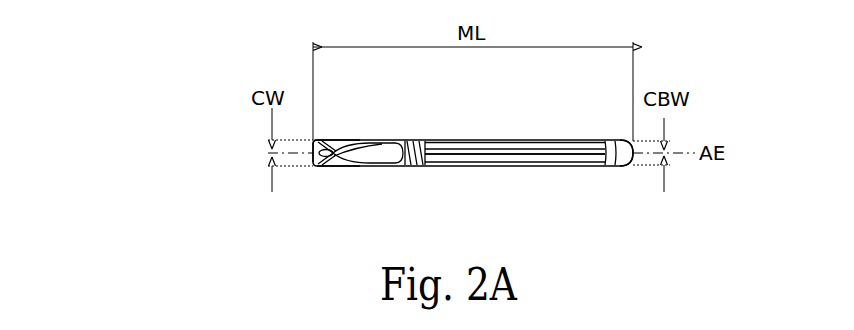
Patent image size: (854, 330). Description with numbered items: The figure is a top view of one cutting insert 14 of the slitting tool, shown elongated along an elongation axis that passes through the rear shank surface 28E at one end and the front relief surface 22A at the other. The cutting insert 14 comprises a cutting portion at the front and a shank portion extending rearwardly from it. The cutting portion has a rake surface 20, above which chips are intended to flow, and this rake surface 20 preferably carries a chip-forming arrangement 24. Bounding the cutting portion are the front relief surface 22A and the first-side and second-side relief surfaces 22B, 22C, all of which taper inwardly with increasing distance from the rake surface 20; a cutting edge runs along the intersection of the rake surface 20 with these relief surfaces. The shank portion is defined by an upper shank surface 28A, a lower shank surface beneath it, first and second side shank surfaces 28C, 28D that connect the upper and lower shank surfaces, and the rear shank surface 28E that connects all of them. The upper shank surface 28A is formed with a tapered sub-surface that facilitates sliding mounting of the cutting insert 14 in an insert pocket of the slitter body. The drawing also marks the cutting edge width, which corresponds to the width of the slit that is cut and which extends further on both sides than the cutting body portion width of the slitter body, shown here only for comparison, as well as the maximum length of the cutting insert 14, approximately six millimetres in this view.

The cutting insert 14 is at (243, 52).
The rake surface 20 is at (377, 150).
The front relief surface 22A is at (260, 153).
The first-side relief surface 22B is at (347, 172).
The second-side relief surface 22C is at (339, 130).
The chip-forming arrangement 24 is at (334, 168).
The upper shank surface 28A is at (553, 160).
The first side shank surface 28C is at (505, 172).
The second side shank surface 28D is at (538, 138).
The rear shank surface 28E is at (660, 164).